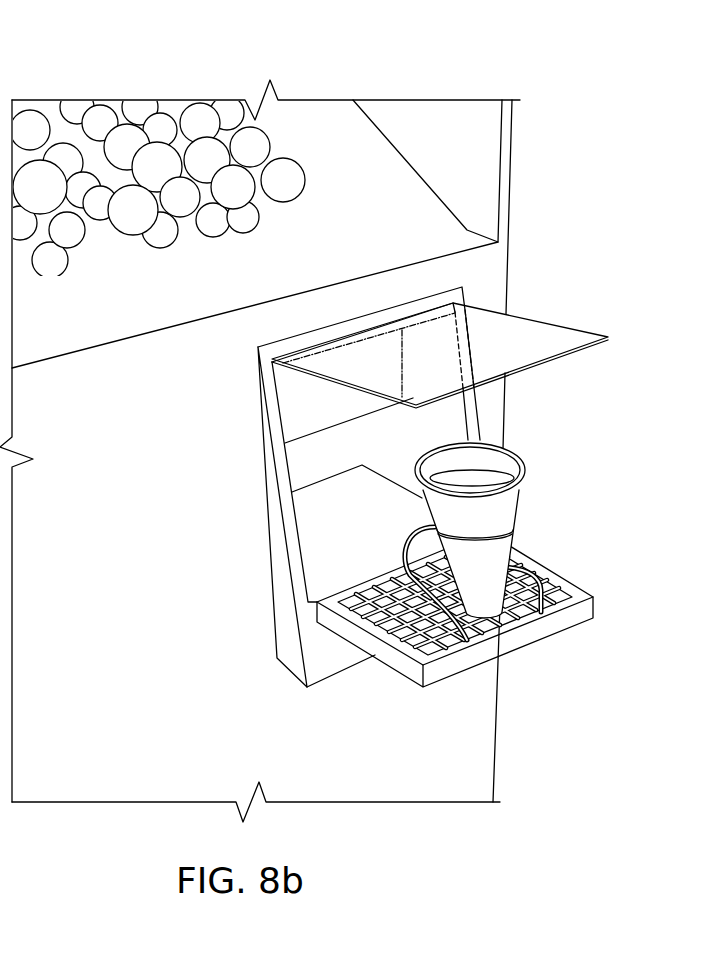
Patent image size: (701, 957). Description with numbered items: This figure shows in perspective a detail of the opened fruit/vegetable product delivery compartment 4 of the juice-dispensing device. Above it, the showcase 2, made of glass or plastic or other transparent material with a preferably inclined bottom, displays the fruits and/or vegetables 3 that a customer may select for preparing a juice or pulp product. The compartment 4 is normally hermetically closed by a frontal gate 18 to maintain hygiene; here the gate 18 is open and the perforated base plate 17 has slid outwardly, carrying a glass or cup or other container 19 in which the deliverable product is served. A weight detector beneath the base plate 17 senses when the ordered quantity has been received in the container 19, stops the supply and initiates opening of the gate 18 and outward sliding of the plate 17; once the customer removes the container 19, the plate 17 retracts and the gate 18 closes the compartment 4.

The showcase 2 is at (256, 282).
The fruits and/or vegetables 3 is at (234, 108).
The fruit/vegetable product delivery compartment 4 is at (276, 537).
The perforated base plate 17 is at (580, 580).
The frontal gate 18 is at (586, 336).
The glass or cup or other container 19 is at (520, 467).